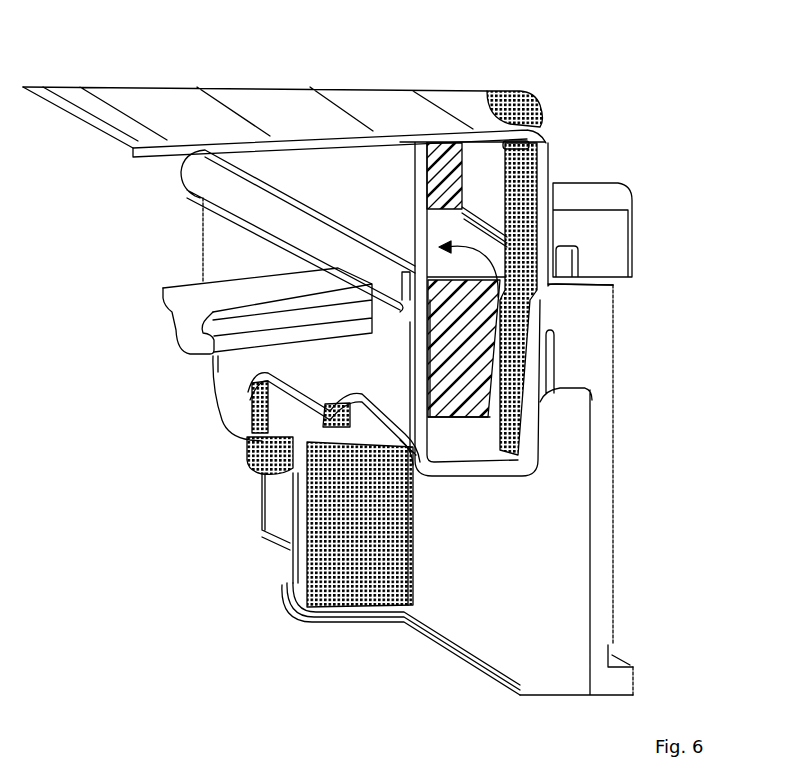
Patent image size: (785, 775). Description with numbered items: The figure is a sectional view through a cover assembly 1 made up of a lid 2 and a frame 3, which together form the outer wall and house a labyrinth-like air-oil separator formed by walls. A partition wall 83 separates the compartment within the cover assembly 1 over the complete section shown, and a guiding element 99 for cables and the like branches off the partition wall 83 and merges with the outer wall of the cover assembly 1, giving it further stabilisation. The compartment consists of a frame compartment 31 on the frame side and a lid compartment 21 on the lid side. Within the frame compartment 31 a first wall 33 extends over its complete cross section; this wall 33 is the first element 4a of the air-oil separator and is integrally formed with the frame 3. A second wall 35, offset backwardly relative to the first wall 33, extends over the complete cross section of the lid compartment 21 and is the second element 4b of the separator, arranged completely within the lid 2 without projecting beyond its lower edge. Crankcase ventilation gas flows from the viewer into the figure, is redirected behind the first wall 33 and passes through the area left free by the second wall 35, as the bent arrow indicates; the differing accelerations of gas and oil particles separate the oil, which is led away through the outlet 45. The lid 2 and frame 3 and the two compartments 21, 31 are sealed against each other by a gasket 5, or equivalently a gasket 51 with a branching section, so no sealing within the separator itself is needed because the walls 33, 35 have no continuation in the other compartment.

The cover assembly 1 is at (96, 58).
The lid 2 is at (368, 98).
The frame 3 is at (597, 535).
The first element of the air-oil separator 4a is at (473, 330).
The second element of the air-oil separator 4b is at (445, 160).
The gasket 5 is at (606, 278).
The lid compartment 21 is at (413, 221).
The frame compartment 31 is at (393, 362).
The first wall 33 is at (472, 363).
The second wall 35 is at (515, 150).
The outlet for separated oil 45 is at (295, 447).
The gasket with branching section 51 is at (425, 303).
The partition wall 83 is at (397, 392).
The guiding element 99 is at (193, 313).